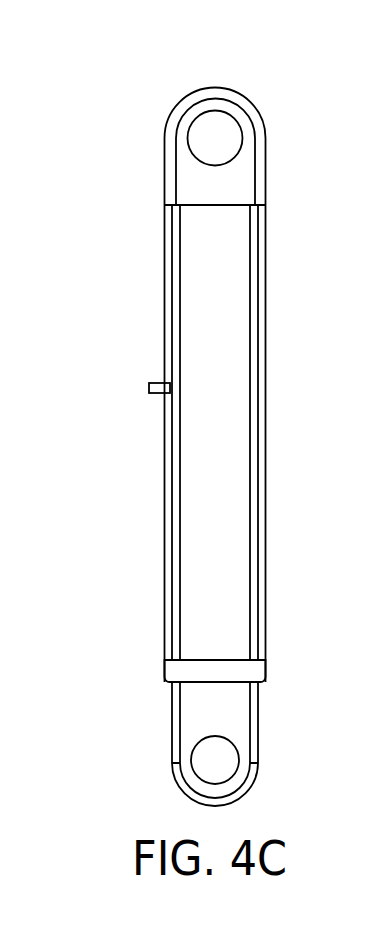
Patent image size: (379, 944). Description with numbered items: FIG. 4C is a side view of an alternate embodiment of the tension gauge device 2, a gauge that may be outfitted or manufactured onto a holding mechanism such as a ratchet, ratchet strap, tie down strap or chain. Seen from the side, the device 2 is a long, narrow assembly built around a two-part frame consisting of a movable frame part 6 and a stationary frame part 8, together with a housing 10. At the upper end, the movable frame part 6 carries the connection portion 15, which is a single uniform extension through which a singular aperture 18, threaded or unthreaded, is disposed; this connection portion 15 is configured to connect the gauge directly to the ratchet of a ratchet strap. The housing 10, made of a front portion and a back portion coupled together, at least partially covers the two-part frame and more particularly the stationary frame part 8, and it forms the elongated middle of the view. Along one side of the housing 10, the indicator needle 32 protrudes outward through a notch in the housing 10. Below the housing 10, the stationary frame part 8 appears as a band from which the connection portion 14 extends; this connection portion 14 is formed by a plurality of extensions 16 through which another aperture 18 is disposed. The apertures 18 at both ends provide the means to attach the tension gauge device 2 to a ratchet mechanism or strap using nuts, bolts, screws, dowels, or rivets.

The tension gauge device 2 is at (266, 51).
The connection portion 15 is at (167, 88).
The aperture 18 is at (236, 133).
The movable frame part 6 is at (247, 178).
The housing 10 is at (262, 240).
The indicator needle 32 is at (160, 388).
The stationary frame part 8 is at (252, 673).
The extensions 16 is at (180, 712).
The connection portion 14 is at (286, 769).